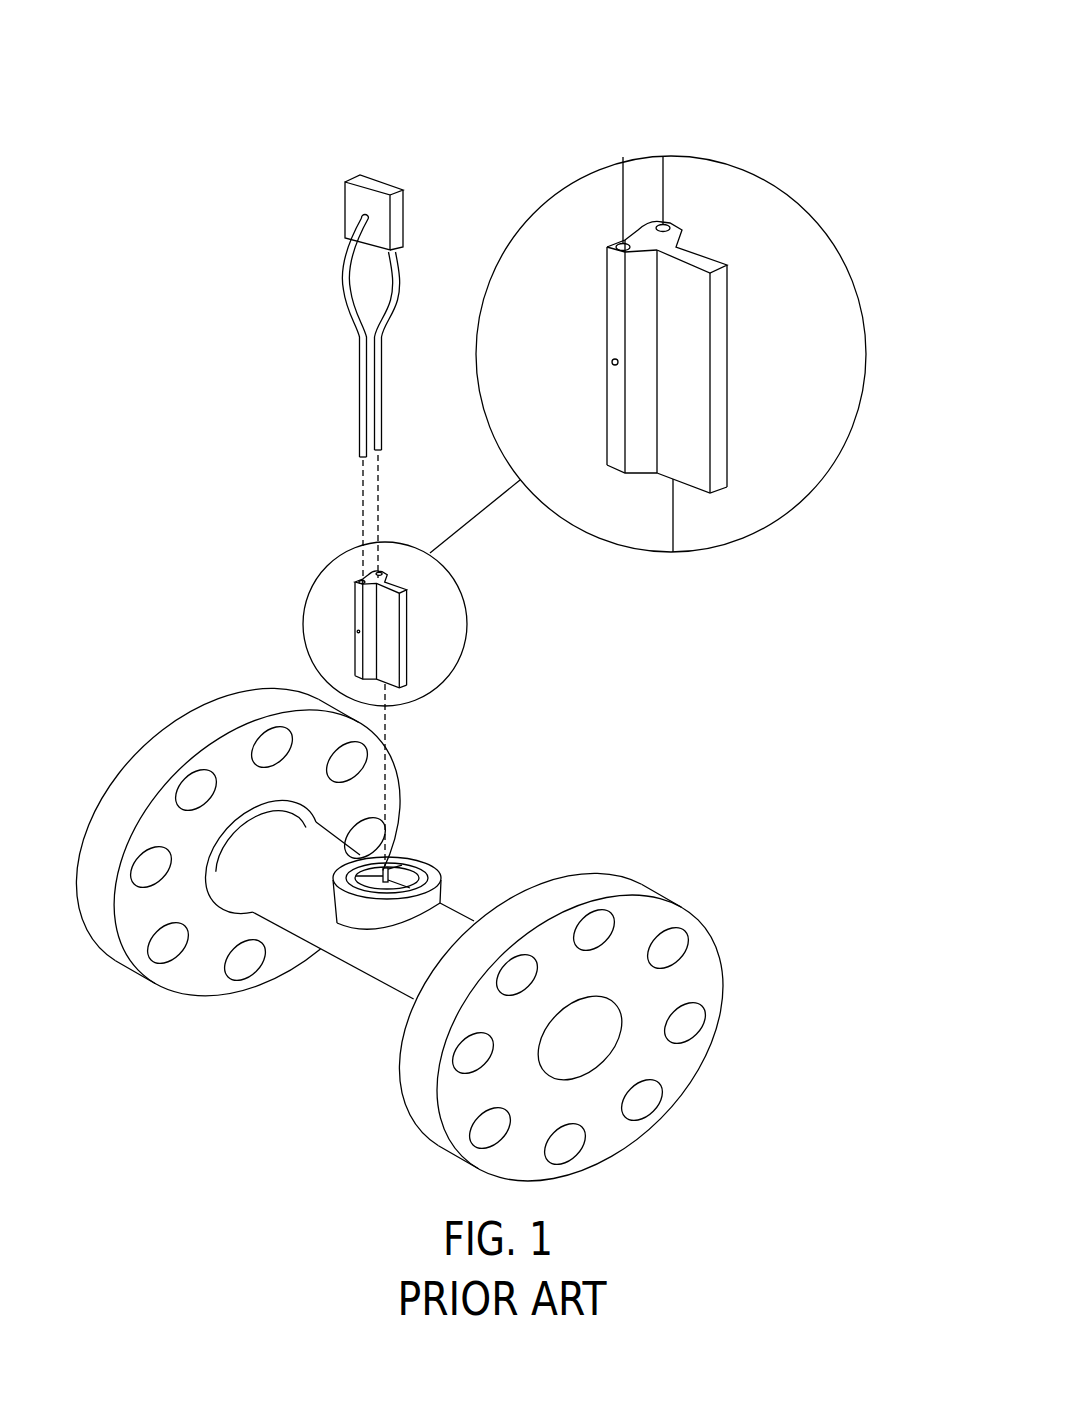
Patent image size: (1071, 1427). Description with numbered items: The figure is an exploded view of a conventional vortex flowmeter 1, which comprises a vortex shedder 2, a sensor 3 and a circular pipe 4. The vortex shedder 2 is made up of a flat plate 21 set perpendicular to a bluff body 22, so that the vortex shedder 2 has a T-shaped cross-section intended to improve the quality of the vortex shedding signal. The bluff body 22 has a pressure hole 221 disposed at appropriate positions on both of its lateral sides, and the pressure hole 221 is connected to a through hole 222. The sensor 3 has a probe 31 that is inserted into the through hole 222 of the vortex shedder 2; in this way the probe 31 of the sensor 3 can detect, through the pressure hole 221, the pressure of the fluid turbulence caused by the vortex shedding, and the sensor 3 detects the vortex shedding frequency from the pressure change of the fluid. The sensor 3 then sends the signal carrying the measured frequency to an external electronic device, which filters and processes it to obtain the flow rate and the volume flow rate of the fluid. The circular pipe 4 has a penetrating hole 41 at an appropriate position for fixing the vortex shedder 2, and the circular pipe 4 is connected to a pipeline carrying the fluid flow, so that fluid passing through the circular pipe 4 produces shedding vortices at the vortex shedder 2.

The vortex flowmeter 1 is at (293, 233).
The vortex shedder 2 is at (498, 353).
The flat plate 21 is at (678, 400).
The bluff body 22 is at (617, 403).
The pressure hole 221 is at (615, 366).
The through hole 222 is at (668, 222).
The sensor 3 is at (375, 203).
The probe 31 is at (362, 392).
The circular pipe 4 is at (357, 947).
The penetrating hole 41 is at (416, 882).